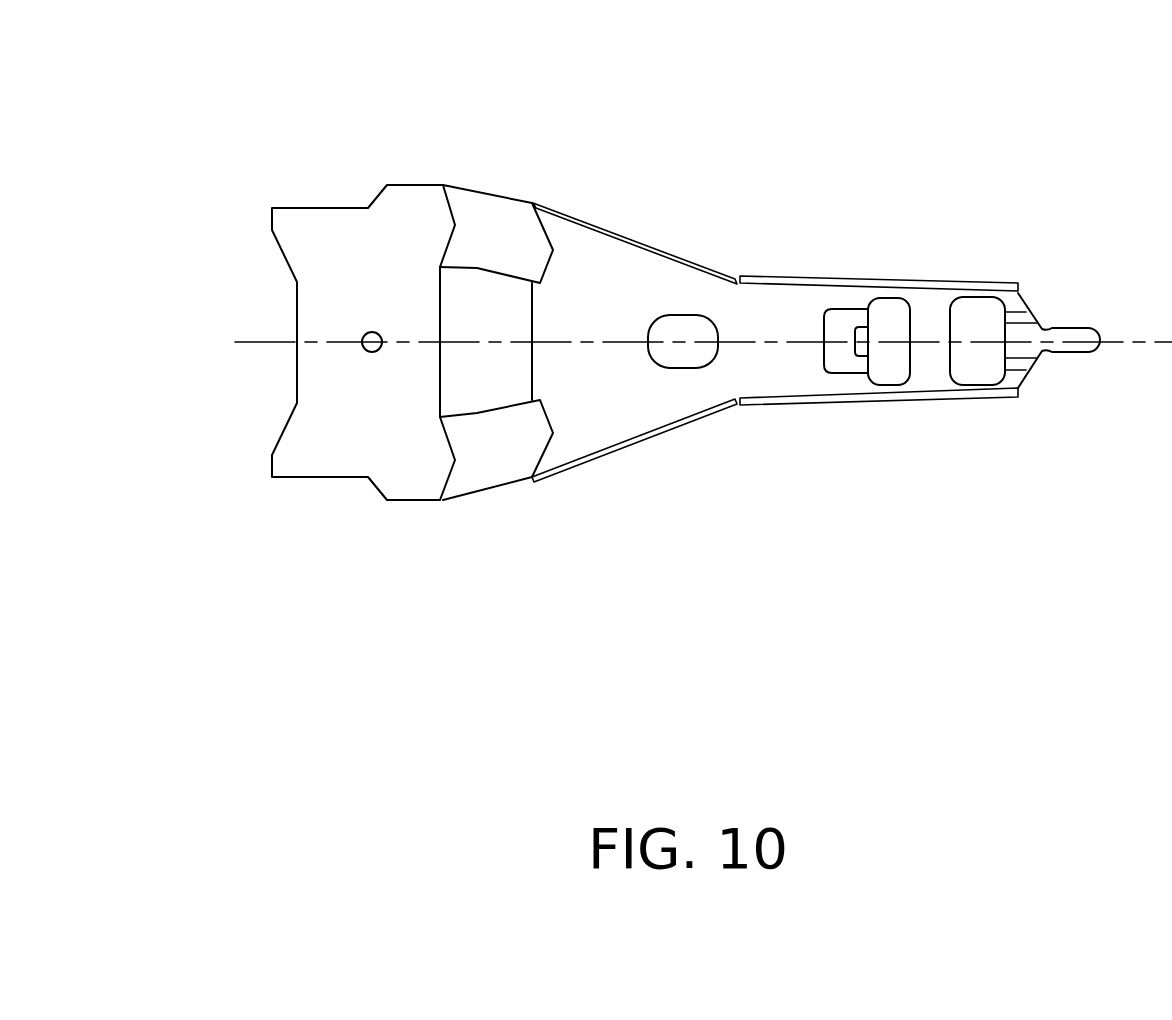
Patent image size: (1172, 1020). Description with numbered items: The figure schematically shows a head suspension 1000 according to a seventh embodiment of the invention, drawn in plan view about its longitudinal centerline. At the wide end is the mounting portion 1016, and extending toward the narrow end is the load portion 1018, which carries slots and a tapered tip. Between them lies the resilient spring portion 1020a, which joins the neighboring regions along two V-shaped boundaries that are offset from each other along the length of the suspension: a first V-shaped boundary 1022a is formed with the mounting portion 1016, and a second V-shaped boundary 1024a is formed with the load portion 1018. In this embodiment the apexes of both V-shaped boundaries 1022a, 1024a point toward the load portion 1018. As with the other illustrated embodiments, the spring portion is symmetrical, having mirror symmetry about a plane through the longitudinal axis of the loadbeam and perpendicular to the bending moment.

The suspension 1000 is at (650, 397).
The mounting portion 1016 is at (312, 450).
The load portion 1018 is at (677, 400).
The spring portion 1020a is at (475, 466).
The V-shaped boundary 1022a is at (450, 443).
The V-shaped boundary 1024a is at (547, 453).